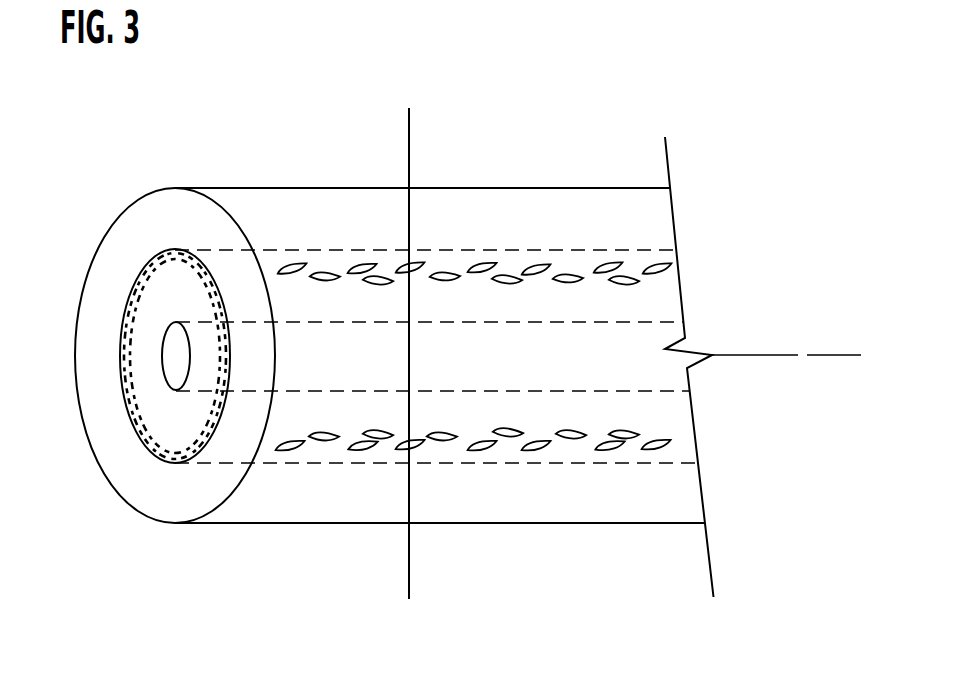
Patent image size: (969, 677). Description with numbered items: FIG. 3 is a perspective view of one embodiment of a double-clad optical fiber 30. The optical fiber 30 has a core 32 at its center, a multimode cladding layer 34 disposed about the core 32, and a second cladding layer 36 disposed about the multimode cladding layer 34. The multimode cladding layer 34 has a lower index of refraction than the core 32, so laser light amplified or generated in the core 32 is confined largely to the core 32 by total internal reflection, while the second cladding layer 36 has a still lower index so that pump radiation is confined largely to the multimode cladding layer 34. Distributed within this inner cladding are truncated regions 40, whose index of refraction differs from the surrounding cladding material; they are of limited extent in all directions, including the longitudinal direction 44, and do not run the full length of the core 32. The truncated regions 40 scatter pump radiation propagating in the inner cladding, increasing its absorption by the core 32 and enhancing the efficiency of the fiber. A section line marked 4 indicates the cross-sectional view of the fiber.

The optical fiber 30 is at (175, 172).
The core 32 is at (168, 348).
The multimode cladding layer 34 is at (133, 391).
The second cladding layer 36 is at (107, 253).
The truncated regions 40 is at (190, 262).
The longitudinal direction 44 is at (750, 357).
The section line 4- 4 is at (409, 123).